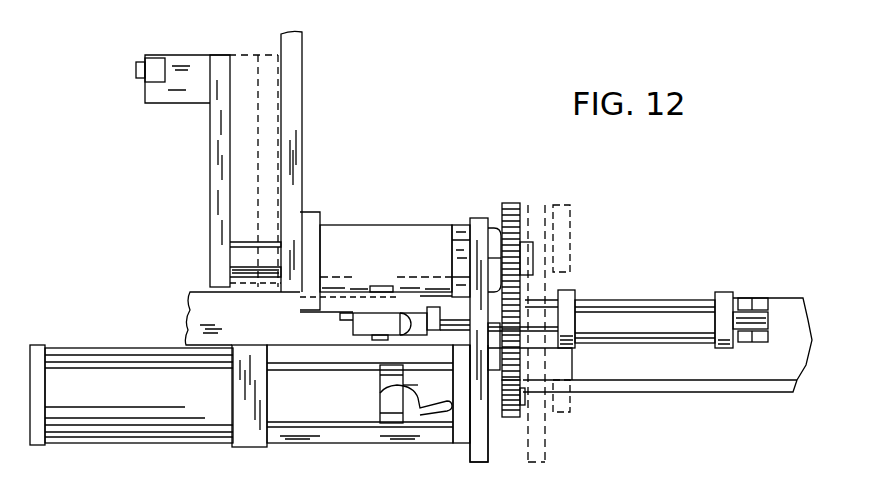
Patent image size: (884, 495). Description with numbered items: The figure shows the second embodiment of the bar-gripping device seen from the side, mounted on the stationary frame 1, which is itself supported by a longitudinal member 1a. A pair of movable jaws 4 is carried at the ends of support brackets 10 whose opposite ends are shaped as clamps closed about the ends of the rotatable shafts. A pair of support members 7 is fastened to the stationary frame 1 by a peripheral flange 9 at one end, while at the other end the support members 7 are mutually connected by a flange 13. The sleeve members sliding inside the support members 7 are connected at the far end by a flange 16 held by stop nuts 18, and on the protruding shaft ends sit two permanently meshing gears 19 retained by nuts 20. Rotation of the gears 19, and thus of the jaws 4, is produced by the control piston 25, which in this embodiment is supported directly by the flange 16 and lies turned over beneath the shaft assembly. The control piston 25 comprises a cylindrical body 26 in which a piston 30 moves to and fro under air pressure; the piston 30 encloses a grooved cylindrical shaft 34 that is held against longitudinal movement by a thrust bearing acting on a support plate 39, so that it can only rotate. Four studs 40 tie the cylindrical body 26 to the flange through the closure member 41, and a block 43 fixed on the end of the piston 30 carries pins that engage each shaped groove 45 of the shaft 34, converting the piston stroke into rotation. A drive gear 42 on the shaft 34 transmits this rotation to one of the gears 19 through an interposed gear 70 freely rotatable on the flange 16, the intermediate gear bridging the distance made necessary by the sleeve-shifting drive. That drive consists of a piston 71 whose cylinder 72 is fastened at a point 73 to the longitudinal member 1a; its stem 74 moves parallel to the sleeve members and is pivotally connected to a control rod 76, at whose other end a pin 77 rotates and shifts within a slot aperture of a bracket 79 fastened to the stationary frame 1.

The stationary frame 1 is at (293, 67).
The longitudinal member 1a is at (788, 343).
The movable jaws 4 is at (195, 72).
The support members 7 is at (347, 248).
The peripheral flange 9 is at (312, 228).
The support brackets 10 is at (220, 143).
The flange 13 is at (461, 232).
The flange 16 is at (481, 220).
The stop nuts 18 is at (495, 235).
The gears 19 is at (520, 225).
The nuts 20 is at (532, 250).
The control piston 25 is at (130, 448).
The cylindrical body 26 is at (155, 380).
The piston 30 is at (262, 380).
The cylindrical shaft 34 is at (443, 396).
The support plate 39 is at (473, 425).
The studs 40 is at (343, 360).
The closure member 41 is at (255, 420).
The drive gear 42 is at (512, 418).
The block 43 is at (388, 406).
The shaped groove 45 is at (382, 389).
The interposed gear 70 is at (520, 360).
The piston 71 is at (692, 285).
The cylinder 72 is at (693, 325).
The fastening point 73 is at (752, 322).
The stem 74 is at (445, 318).
The control rod 76 is at (400, 323).
The pin 77 is at (385, 287).
The bracket 79 is at (300, 300).